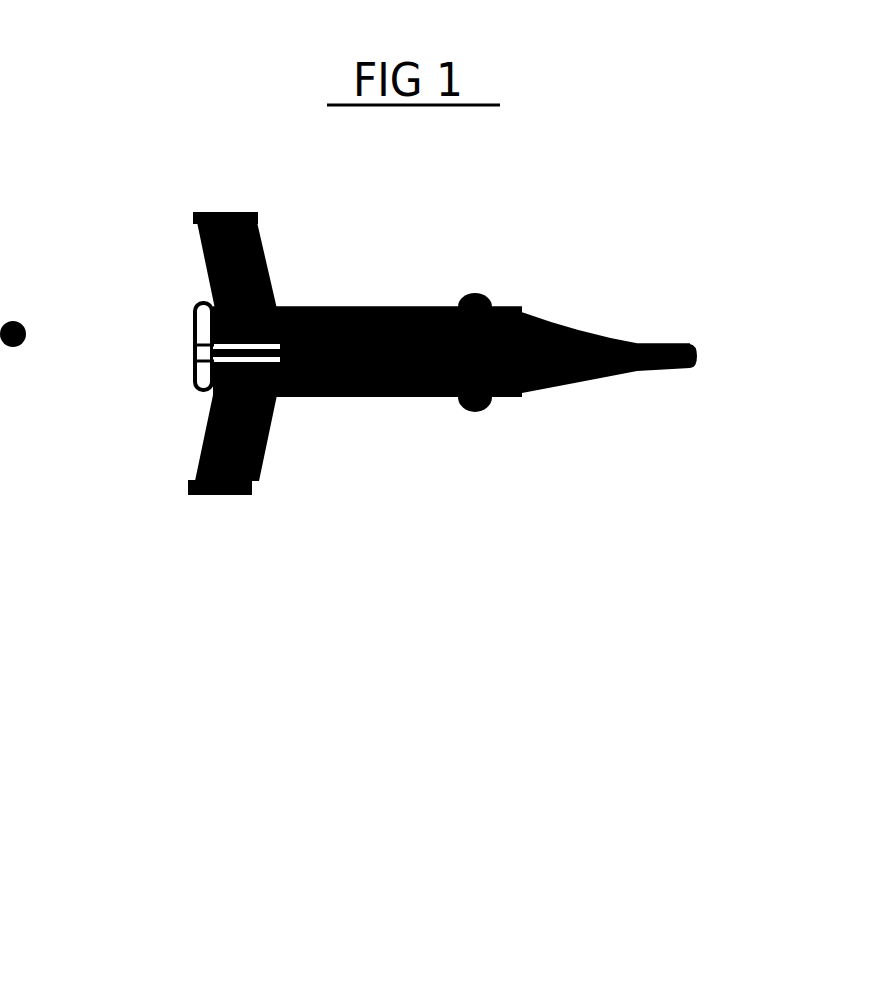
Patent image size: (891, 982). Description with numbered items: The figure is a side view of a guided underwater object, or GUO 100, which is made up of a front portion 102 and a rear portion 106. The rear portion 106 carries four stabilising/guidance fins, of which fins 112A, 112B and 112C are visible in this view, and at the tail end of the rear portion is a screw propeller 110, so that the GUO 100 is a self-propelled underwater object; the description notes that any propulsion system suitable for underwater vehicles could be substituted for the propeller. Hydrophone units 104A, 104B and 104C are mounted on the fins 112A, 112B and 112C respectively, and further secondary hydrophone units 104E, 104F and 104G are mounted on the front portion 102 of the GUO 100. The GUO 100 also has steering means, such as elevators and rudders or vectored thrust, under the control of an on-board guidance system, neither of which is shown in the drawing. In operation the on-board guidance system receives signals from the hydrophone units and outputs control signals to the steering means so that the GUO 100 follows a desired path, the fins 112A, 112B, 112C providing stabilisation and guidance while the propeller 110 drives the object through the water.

The GUO 100 is at (575, 162).
The front portion 102 is at (608, 461).
The hydrophone unit 104A is at (168, 176).
The hydrophone unit 104B is at (13, 290).
The hydrophone unit 104C is at (131, 574).
The secondary hydrophone unit 104E is at (667, 250).
The secondary hydrophone unit 104F is at (705, 303).
The secondary hydrophone unit 104G is at (505, 528).
The rear portion 106 is at (367, 461).
The screw propeller 110 is at (147, 322).
The stabilising/guidance fin 112A is at (298, 242).
The stabilising/guidance fin 112B is at (367, 276).
The stabilising/guidance fin 112C is at (256, 579).